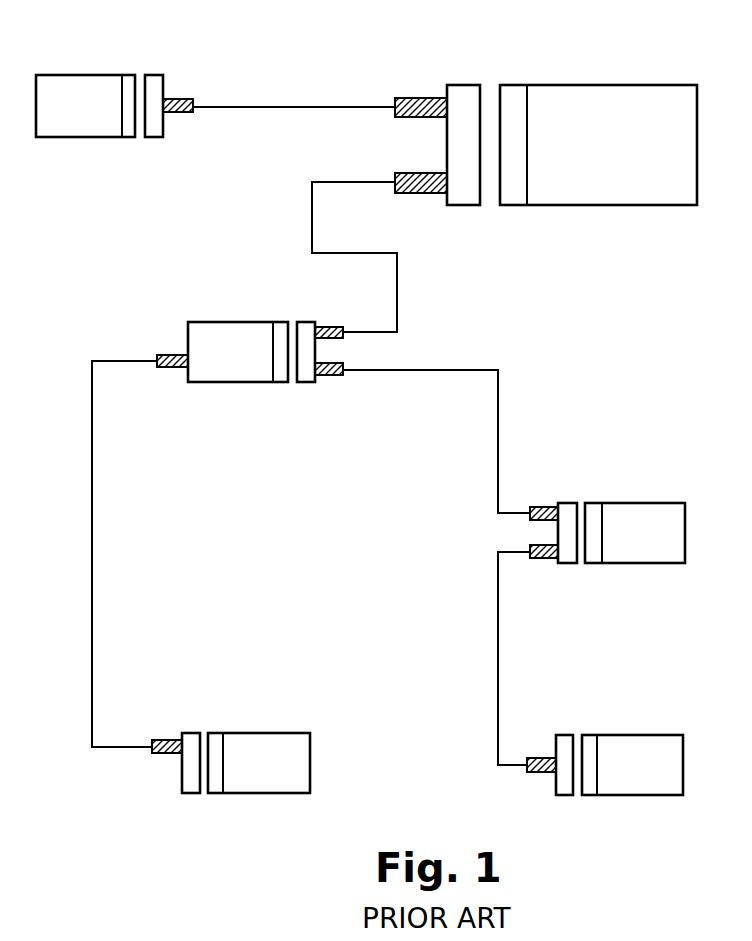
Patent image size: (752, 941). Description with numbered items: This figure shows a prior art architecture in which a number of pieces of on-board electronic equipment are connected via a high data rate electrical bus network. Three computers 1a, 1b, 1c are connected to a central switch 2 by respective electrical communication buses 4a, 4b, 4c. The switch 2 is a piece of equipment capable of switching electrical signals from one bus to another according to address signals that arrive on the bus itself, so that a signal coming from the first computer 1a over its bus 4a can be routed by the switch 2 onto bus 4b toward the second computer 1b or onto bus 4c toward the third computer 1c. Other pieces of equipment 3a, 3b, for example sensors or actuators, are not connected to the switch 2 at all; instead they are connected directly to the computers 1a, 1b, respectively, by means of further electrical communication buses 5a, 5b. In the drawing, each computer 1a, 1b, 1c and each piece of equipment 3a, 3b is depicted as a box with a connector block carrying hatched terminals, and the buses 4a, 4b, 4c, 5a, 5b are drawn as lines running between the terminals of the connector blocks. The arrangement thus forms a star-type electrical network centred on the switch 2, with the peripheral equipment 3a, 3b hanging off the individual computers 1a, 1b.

The computer 1a is at (619, 85).
The computer 1b is at (637, 503).
The computer 1c is at (258, 794).
The switch 2 is at (237, 383).
The piece of equipment 3a is at (88, 82).
The piece of equipment 3b is at (630, 796).
The electrical communication bus 4a is at (312, 215).
The electrical communication bus 4b is at (461, 370).
The electrical communication bus 4c is at (92, 553).
The electrical communication bus 5a is at (292, 106).
The electrical communication bus 5b is at (498, 648).